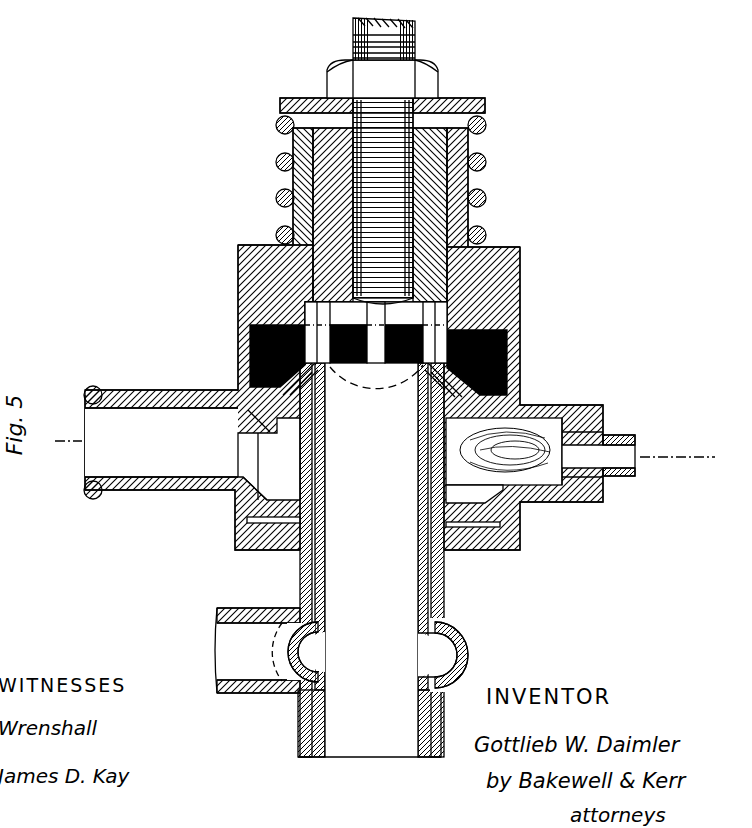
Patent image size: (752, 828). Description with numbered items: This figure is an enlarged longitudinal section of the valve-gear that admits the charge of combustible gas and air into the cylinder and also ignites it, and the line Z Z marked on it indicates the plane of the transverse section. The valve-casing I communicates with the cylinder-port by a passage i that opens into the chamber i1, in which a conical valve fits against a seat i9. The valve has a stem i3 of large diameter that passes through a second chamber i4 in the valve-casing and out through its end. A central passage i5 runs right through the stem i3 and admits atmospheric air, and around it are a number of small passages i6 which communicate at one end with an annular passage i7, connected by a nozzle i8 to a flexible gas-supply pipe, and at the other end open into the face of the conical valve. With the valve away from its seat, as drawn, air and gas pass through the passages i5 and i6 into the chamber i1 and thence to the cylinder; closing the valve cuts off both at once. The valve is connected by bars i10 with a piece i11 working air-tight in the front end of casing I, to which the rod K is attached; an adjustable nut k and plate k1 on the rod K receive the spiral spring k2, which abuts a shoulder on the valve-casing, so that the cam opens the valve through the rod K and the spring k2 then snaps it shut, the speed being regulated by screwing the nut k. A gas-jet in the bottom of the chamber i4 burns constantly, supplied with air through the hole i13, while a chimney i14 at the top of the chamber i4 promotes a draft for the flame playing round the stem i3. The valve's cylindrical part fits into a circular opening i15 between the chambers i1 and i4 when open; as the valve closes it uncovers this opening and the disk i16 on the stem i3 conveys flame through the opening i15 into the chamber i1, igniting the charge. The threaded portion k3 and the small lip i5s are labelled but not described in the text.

The rod K is at (371, 39).
The adjustable nut k is at (373, 79).
The plate k1 is at (382, 96).
The spiral spring k2 is at (370, 180).
The threaded spindle k3 is at (393, 201).
The valve-casing I is at (343, 339).
The passage i is at (418, 348).
The chamber i1 is at (277, 348).
The stem i3 is at (361, 560).
The second chamber i4 is at (269, 459).
The central passage i5 is at (369, 560).
The lip i5s is at (259, 455).
The small passages i6 is at (369, 560).
The annular passage i7 is at (372, 655).
The nozzle i8 is at (257, 650).
The seat i9 is at (367, 332).
The bars i10 is at (375, 311).
The piece i11 is at (372, 380).
The hole i13 is at (587, 451).
The chimney i14 is at (161, 442).
The circular opening i15 is at (480, 424).
The disk i16 is at (271, 495).
The section line Z is at (380, 443).